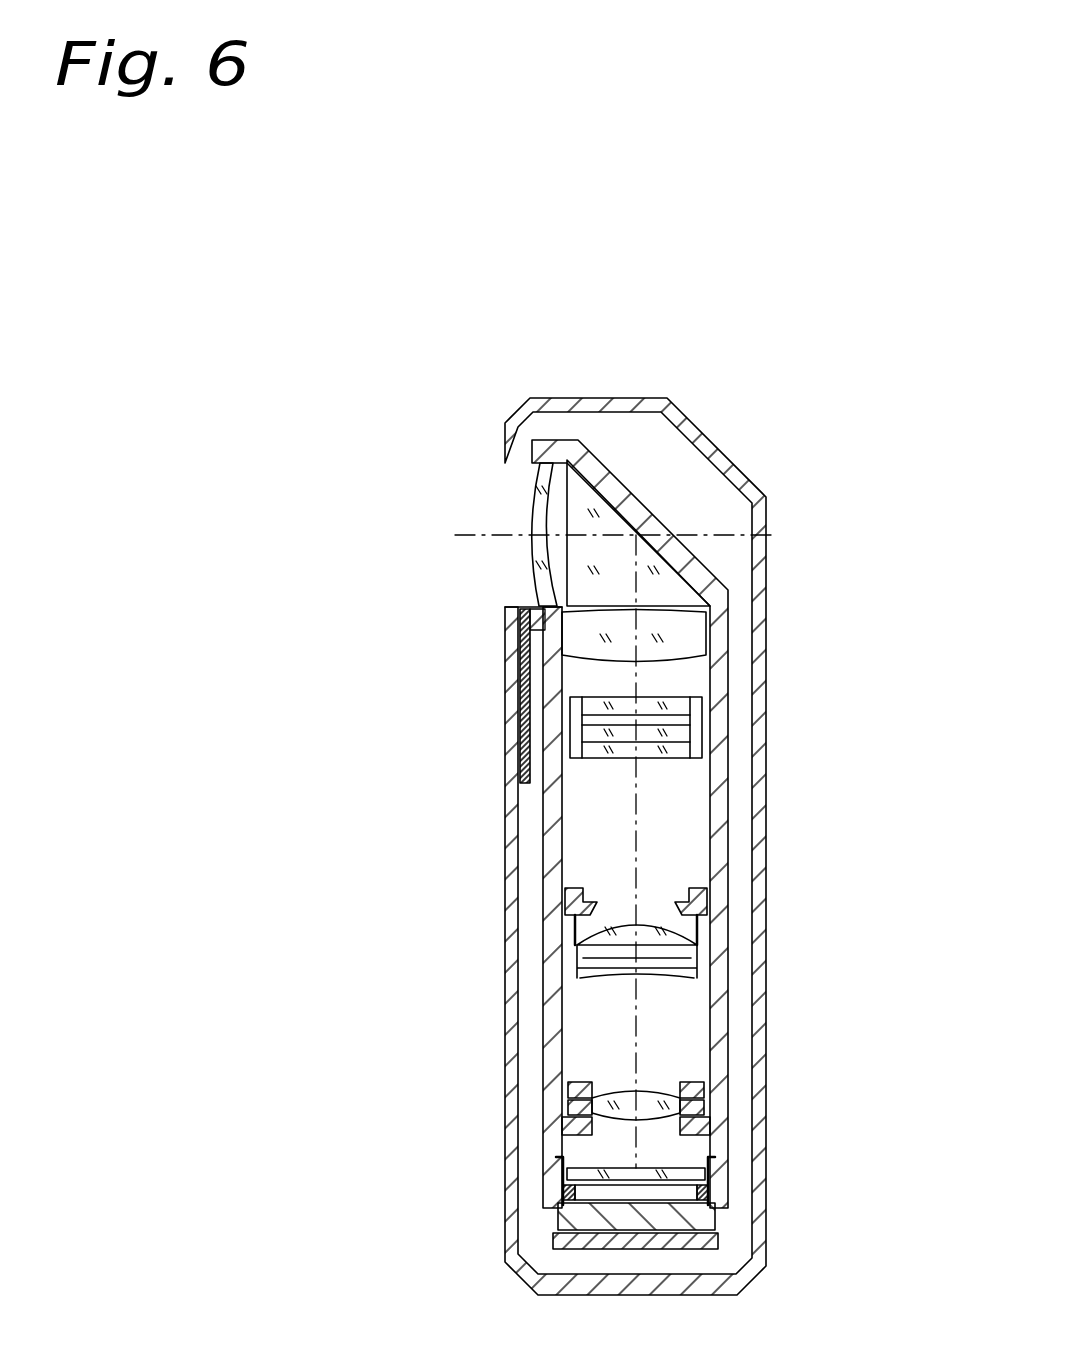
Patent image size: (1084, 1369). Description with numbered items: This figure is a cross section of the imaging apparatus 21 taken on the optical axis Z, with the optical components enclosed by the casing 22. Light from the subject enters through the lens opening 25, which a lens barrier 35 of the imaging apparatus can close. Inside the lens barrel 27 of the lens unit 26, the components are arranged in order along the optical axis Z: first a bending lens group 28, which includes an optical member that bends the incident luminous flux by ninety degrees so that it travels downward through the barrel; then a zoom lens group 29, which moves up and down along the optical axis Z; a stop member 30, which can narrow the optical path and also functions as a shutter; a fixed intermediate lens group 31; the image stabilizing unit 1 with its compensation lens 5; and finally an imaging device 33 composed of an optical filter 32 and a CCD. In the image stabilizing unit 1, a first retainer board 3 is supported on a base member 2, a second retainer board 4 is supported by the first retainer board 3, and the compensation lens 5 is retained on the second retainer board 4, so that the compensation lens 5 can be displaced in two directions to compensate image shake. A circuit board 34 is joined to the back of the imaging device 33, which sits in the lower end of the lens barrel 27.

The imaging apparatus 21 is at (563, 326).
The casing 22 is at (644, 398).
The lens opening 25 is at (506, 464).
The lens unit 26 is at (672, 500).
The lens barrel 27 is at (698, 557).
The bending lens group 28 is at (690, 617).
The zoom lens group 29 is at (700, 712).
The stop member 30 is at (700, 888).
The fixed intermediate lens group 31 is at (679, 946).
The optical filter 32 is at (655, 1165).
The imaging device 33 is at (700, 1222).
The circuit board 34 is at (682, 1250).
The lens barrier 35 is at (527, 688).
The image stabilizing unit 1 is at (602, 1058).
The base member 2 is at (545, 1127).
The first retainer board 3 is at (567, 1108).
The second retainer board 4 is at (567, 1084).
The compensation lens 5 is at (644, 1088).
The optical axis Z is at (636, 833).